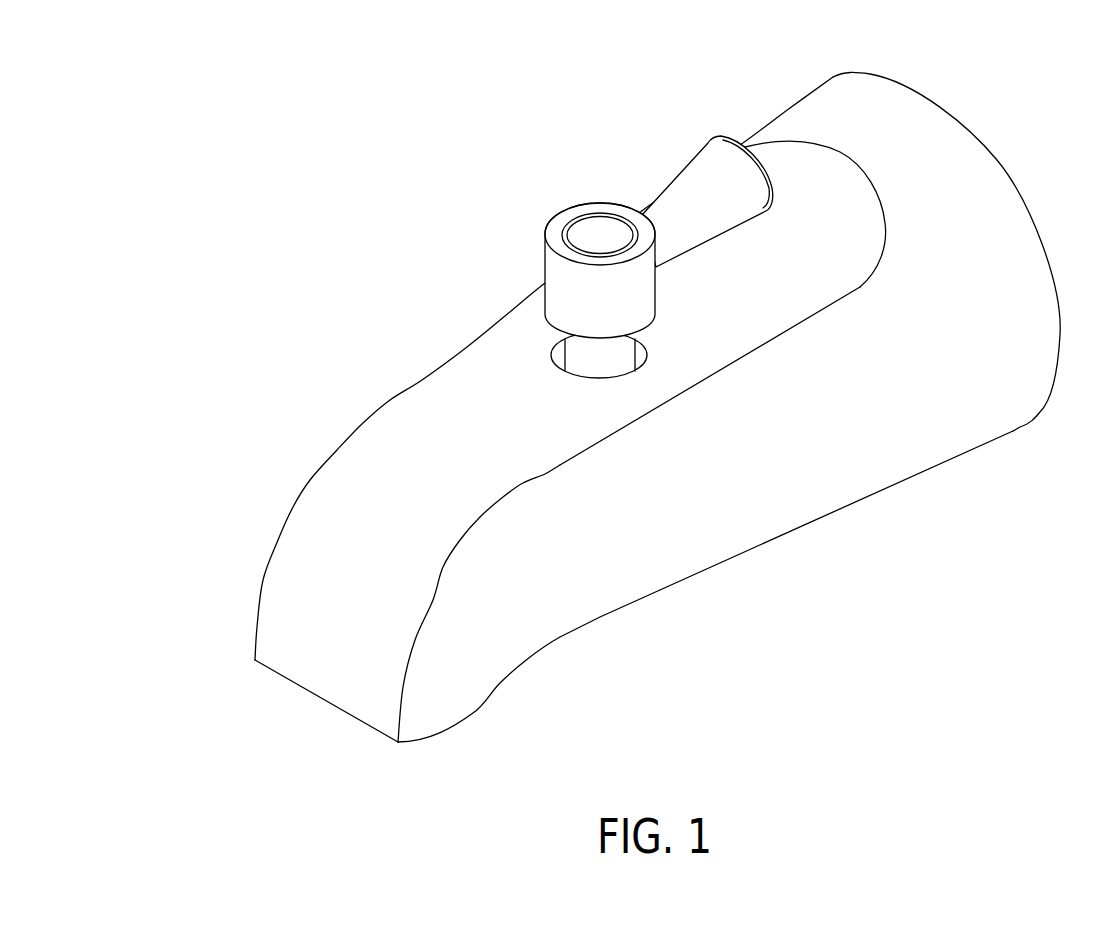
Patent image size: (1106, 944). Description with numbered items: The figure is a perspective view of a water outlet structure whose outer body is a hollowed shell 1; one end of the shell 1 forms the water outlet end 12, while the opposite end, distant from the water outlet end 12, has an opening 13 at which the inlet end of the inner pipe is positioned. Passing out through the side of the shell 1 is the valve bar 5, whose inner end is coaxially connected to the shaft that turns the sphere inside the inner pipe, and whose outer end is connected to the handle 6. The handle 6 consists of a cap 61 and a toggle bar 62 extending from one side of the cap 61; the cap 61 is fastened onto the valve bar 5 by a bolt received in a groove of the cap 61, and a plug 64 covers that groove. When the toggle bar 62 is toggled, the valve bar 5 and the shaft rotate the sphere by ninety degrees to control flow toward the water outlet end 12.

The shell 1 is at (646, 408).
The water outlet end 12 is at (365, 726).
The opening 13 is at (1000, 156).
The valve bar 5 is at (590, 368).
The handle 6 is at (614, 233).
The cap 61 is at (550, 277).
The toggle bar 62 is at (683, 186).
The plug 64 is at (597, 218).